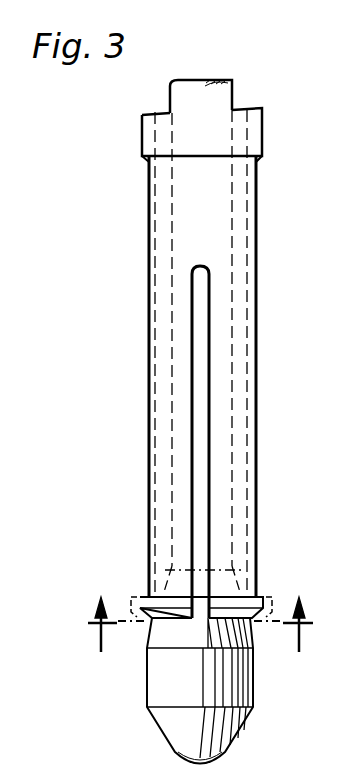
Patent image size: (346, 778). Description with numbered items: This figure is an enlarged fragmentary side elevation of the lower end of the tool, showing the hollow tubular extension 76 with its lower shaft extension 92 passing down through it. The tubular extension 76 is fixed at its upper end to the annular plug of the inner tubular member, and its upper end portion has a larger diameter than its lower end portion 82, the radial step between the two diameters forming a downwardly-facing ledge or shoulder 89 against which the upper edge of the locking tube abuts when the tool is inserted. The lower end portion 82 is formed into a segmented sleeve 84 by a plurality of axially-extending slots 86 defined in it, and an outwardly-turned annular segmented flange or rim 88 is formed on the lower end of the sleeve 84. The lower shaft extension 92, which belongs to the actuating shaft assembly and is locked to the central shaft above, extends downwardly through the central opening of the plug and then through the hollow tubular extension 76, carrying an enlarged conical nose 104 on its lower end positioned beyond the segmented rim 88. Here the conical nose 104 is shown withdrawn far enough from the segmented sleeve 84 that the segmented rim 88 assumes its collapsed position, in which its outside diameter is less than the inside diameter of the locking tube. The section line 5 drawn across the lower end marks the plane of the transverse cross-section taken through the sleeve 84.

The lower shaft extension 92 is at (234, 90).
The hollow tubular extension 76 is at (263, 130).
The downwardly-facing ledge or shoulder 89 is at (259, 160).
The lower end portion of the tubular extension 82 is at (256, 262).
The segmented sleeve 84 is at (257, 347).
The axially-extending slots 86 is at (208, 437).
The annular segmented flange or rim 88 is at (258, 597).
The conical nose 104 is at (176, 757).
The section line 5- 5 is at (200, 643).